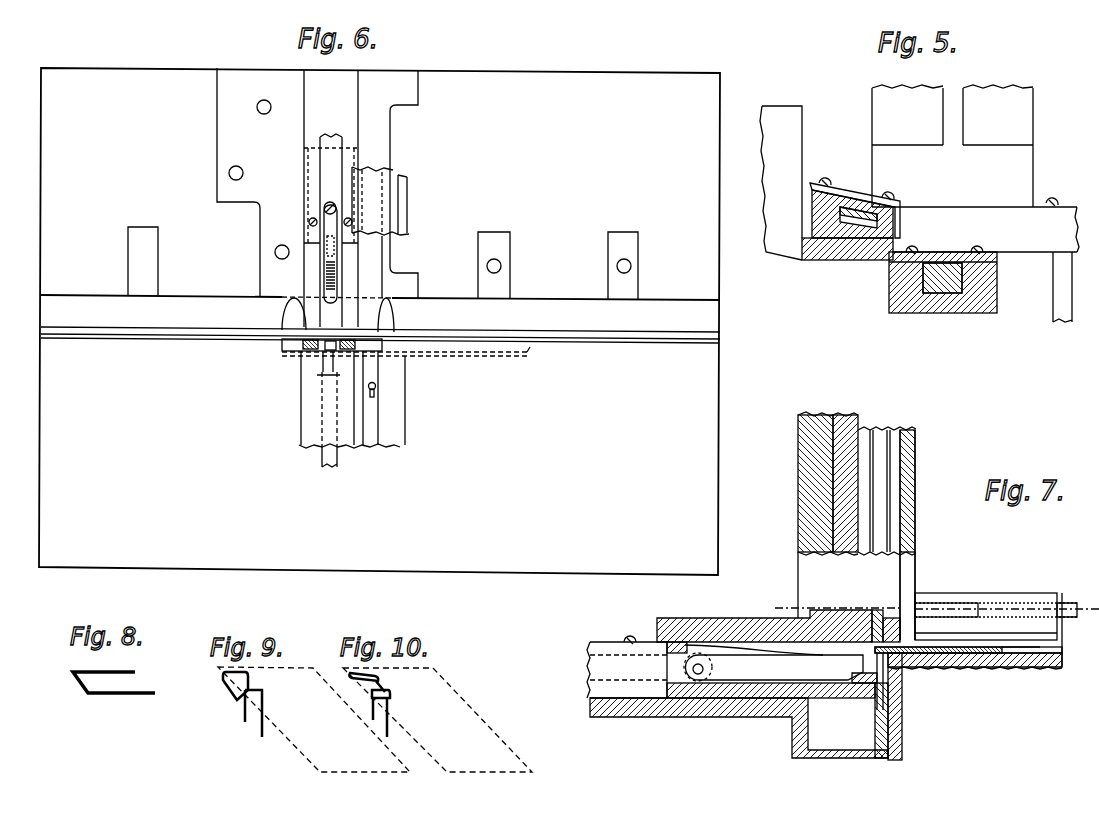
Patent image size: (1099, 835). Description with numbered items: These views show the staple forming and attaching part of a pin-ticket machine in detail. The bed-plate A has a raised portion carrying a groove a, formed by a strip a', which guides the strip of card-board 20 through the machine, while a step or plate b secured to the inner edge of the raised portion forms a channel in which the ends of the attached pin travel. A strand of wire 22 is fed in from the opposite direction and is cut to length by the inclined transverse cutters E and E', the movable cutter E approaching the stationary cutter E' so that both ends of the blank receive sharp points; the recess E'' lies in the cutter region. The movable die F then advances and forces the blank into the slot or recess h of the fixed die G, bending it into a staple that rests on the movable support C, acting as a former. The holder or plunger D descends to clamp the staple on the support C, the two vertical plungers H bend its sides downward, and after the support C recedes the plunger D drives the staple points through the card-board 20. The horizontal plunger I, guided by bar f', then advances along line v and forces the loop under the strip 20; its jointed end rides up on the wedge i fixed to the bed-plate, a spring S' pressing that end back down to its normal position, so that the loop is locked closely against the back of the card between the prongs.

In FIG. 6, the bed-plate A is at (379, 321).
In FIG. 6, the groove a is at (380, 320).
In FIG. 7, the groove a is at (968, 703).
In FIG. 7, the strip a' is at (975, 645).
In FIG. 6, the step or plate b is at (584, 342).
In FIG. 7, the step or plate b is at (878, 738).
In FIG. 7, the movable support C is at (778, 618).
In FIG. 7, the holder or plunger D is at (880, 445).
In FIG. 6, the movable cutter E is at (349, 201).
In FIG. 5, the movable cutter E is at (855, 197).
In FIG. 7, the movable cutter E is at (997, 611).
In FIG. 6, the stationary cutter E' is at (352, 399).
In FIG. 5, the slot in bracket E'' is at (826, 197).
In FIG. 6, the movable die F is at (330, 456).
In FIG. 7, the movable die F is at (1007, 596).
In FIG. 7, the rod bar f' is at (947, 594).
In FIG. 6, the fixed die G is at (300, 351).
In FIG. 7, the fixed die G is at (915, 591).
In FIG. 7, the vertically-reciprocating plunger H is at (863, 500).
In FIG. 6, the slot or recess h is at (330, 346).
In FIG. 6, the horizontally-reciprocating plunger I is at (323, 137).
In FIG. 5, the horizontally-reciprocating plunger I is at (942, 287).
In FIG. 7, the horizontally-reciprocating plunger I is at (585, 660).
In FIG. 7, the wedge i is at (866, 690).
In FIG. 6, the spring S' is at (312, 252).
In FIG. 7, the spring S' is at (754, 624).
In FIG. 7, the section line v is at (837, 607).
In FIG. 7, the strip of card-board 20 is at (915, 652).
In FIG. 9, the strip of card-board 20 is at (314, 719).
In FIG. 10, the strip of card-board 20 is at (437, 720).
In FIG. 6, the strand of wire 22 is at (406, 361).
In FIG. 8, the strand of wire 22 is at (114, 692).
In FIG. 9, the strand of wire 22 is at (245, 715).
In FIG. 10, the strand of wire 22 is at (350, 676).